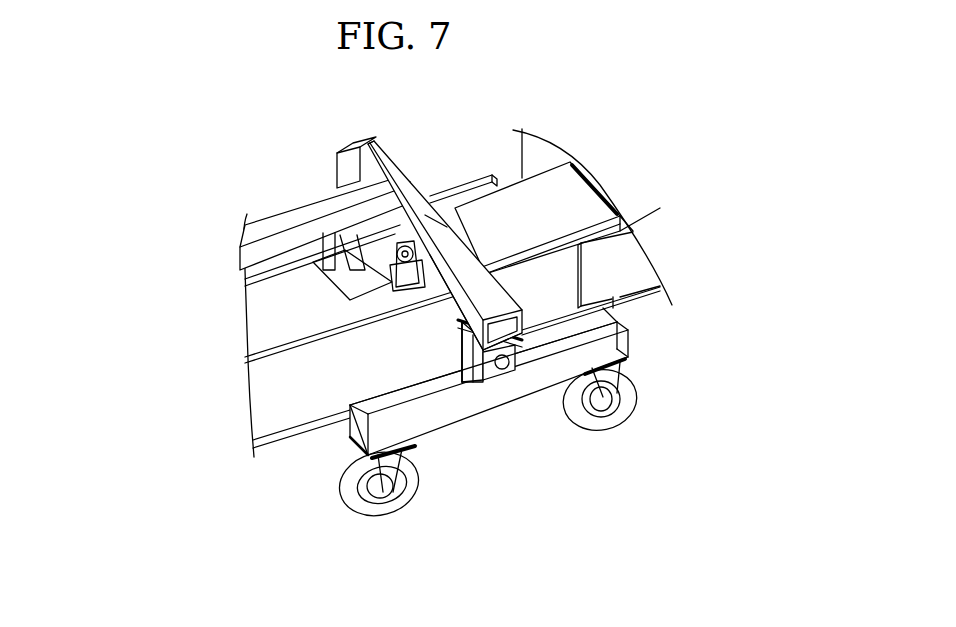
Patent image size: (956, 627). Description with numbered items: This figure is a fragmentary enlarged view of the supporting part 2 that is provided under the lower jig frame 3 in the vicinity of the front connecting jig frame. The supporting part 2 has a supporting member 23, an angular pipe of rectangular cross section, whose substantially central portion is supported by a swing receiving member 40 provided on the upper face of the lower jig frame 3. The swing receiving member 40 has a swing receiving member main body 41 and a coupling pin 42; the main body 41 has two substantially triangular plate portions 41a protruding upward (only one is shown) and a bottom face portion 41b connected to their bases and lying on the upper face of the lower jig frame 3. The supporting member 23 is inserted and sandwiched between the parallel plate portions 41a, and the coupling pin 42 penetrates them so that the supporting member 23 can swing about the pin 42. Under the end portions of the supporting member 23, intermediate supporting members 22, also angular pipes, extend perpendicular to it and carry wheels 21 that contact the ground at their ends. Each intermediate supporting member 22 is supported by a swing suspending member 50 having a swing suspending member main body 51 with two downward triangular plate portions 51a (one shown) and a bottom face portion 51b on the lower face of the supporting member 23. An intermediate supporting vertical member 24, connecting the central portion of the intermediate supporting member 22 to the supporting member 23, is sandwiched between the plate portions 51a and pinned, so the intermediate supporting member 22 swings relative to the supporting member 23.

The supporting part 2 is at (605, 484).
The lower jig frame 3 is at (290, 403).
The wheels (legs) 21 is at (620, 417).
The intermediate supporting member 22 is at (483, 177).
The supporting member 23 is at (337, 165).
The intermediate supporting vertical member 24 is at (485, 360).
The swing receiving member 40 is at (447, 205).
The swing receiving member main body 41 is at (424, 249).
The plate portion 41a is at (370, 145).
The bottom face portion 41b is at (398, 287).
The coupling pin 42 is at (398, 258).
The swing suspending member 50 is at (537, 338).
The swing suspending member main body 51 is at (455, 401).
The plate portion 51a is at (470, 362).
The bottom face portion 51b is at (462, 345).